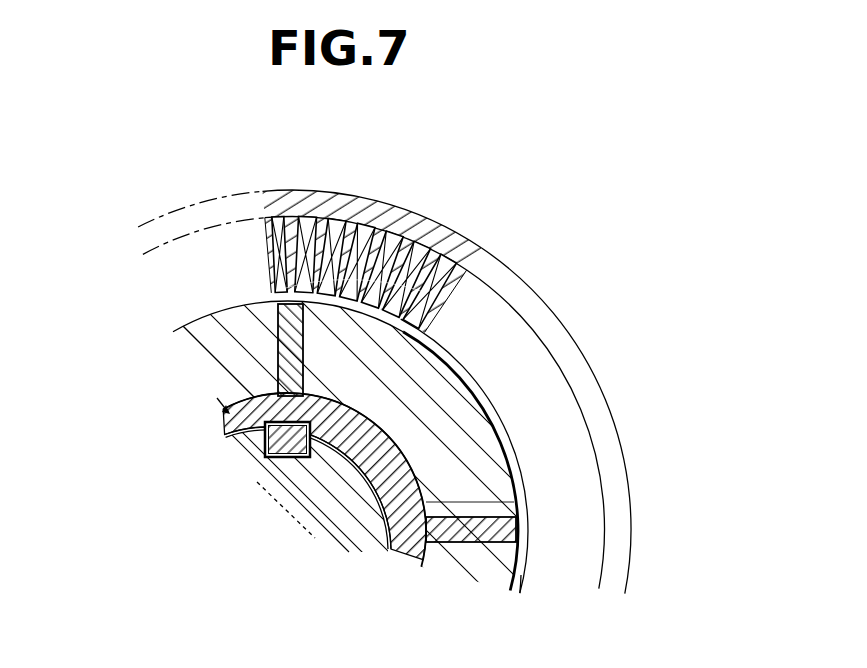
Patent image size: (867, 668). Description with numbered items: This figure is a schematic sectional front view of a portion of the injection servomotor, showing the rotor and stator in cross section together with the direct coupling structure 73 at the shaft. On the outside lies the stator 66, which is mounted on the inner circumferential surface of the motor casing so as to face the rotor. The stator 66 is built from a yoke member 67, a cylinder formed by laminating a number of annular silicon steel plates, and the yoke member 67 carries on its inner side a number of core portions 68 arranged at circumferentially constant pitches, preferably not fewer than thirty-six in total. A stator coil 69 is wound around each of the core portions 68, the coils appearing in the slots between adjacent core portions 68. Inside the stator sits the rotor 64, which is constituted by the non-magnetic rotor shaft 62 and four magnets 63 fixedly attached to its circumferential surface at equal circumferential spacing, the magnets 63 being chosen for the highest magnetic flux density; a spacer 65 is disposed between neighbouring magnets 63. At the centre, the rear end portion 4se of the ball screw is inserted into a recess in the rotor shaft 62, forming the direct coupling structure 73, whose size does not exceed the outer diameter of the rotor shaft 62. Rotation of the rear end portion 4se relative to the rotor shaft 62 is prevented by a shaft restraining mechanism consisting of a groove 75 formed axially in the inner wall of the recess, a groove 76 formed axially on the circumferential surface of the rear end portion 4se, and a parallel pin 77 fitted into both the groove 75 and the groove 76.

The yoke member 67 is at (416, 238).
The core portions 68 is at (403, 250).
The stator coil 69 is at (272, 264).
The stator 66 is at (401, 331).
The direct coupling structure 73 is at (414, 460).
The magnets 63 is at (507, 453).
The rotor shaft 62 is at (527, 493).
The rotor 64 is at (527, 570).
The spacer 65 is at (278, 336).
The groove 75 is at (242, 438).
The parallel pin 77 is at (288, 457).
The groove 76 is at (313, 459).
The rear end portion 4se is at (389, 541).